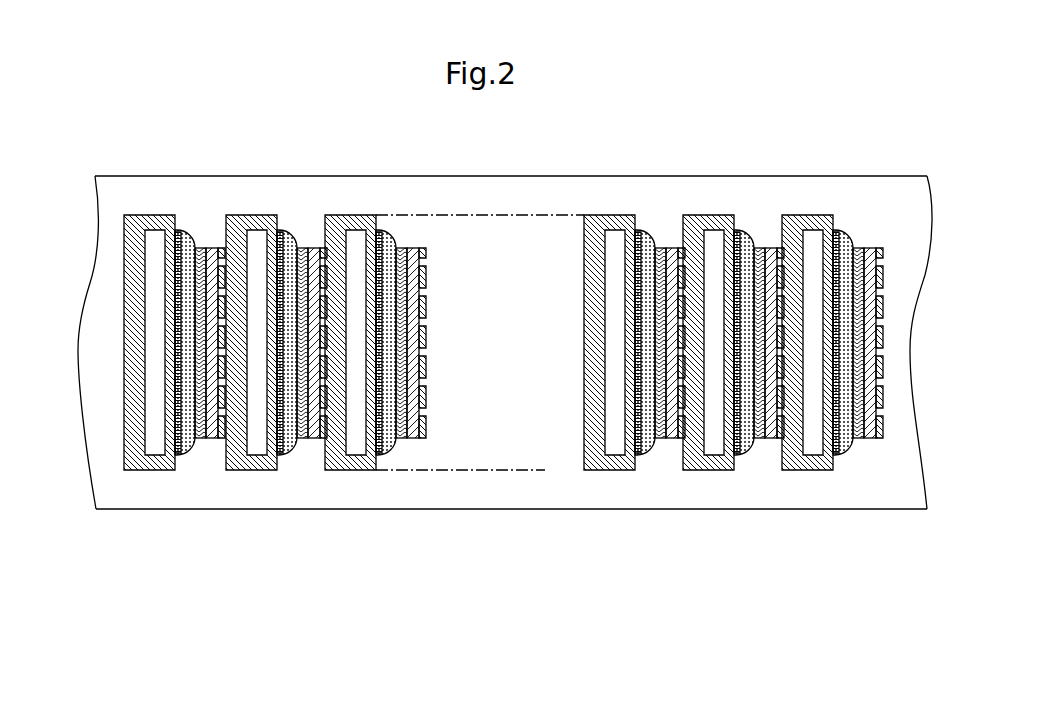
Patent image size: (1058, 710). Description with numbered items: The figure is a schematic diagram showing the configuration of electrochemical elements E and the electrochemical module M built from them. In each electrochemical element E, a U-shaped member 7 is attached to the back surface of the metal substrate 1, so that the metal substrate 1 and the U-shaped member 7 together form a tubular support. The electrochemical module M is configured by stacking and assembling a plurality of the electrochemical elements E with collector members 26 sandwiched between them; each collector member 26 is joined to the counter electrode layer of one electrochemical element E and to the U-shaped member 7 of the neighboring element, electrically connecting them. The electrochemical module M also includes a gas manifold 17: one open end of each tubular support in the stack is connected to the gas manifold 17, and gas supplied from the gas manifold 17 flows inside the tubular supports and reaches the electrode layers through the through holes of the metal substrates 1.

The U-shaped member 7 is at (126, 296).
The metal substrate 1 is at (172, 214).
The gas manifold 17 is at (480, 190).
The electrochemical element E is at (175, 488).
The collector member 26 is at (236, 424).
The electrochemical module M is at (566, 557).